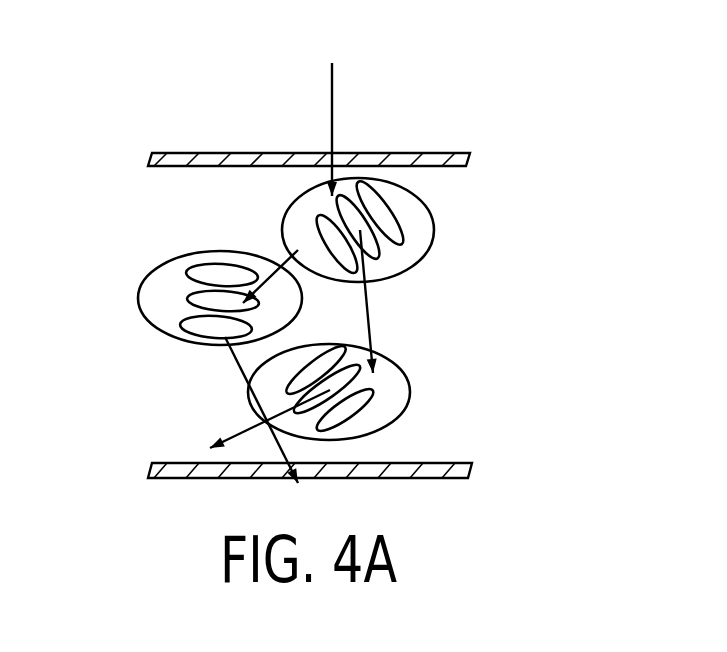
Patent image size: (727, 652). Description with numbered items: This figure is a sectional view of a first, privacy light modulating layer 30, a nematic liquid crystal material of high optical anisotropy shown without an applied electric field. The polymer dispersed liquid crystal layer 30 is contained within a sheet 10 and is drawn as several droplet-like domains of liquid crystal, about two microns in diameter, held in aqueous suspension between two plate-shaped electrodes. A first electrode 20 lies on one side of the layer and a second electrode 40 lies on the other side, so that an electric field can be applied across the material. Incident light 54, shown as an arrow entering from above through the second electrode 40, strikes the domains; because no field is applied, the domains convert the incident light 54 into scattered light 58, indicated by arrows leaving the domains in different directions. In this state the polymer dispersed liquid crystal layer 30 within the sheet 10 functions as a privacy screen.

The sheet 10 is at (168, 74).
The first electrode 20 is at (476, 469).
The privacy light modulating layer 30 is at (505, 275).
The second electrode 40 is at (459, 153).
The incident light 54 is at (334, 90).
The scattered light 58 is at (283, 257).